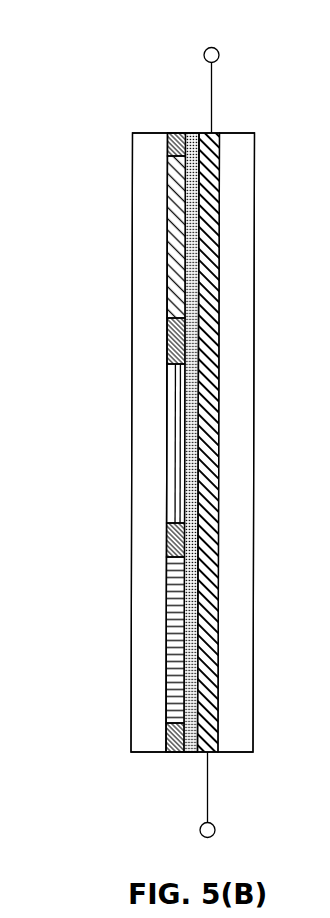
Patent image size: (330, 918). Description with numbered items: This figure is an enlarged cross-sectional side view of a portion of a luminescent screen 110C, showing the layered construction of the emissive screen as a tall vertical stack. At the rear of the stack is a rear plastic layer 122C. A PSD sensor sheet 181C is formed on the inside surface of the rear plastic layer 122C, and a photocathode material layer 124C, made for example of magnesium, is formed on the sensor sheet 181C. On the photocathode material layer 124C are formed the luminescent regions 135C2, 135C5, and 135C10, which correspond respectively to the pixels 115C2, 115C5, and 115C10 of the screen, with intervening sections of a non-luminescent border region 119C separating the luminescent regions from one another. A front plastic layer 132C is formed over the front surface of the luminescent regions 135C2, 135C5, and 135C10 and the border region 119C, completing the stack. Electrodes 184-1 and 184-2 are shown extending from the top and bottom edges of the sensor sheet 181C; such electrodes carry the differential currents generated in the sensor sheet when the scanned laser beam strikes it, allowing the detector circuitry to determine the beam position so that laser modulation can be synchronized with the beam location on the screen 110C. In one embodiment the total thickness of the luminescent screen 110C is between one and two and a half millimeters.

The luminescent screen 110C is at (152, 74).
The photocathode material layer 124C is at (193, 131).
The front plastic layer 132C is at (147, 142).
The electrode 184-1 is at (214, 70).
The PSD sensor sheet 181C is at (220, 126).
The rear plastic layer 122C is at (237, 152).
The pixel 115C2 is at (116, 190).
The luminescent region 135C2 is at (168, 257).
The non-luminescent border region 119C is at (168, 338).
The pixel 115C5 is at (116, 383).
The luminescent region 135C5 is at (176, 450).
The pixel 115C10 is at (118, 593).
The luminescent region 135C10 is at (168, 645).
The electrode 184-2 is at (207, 793).